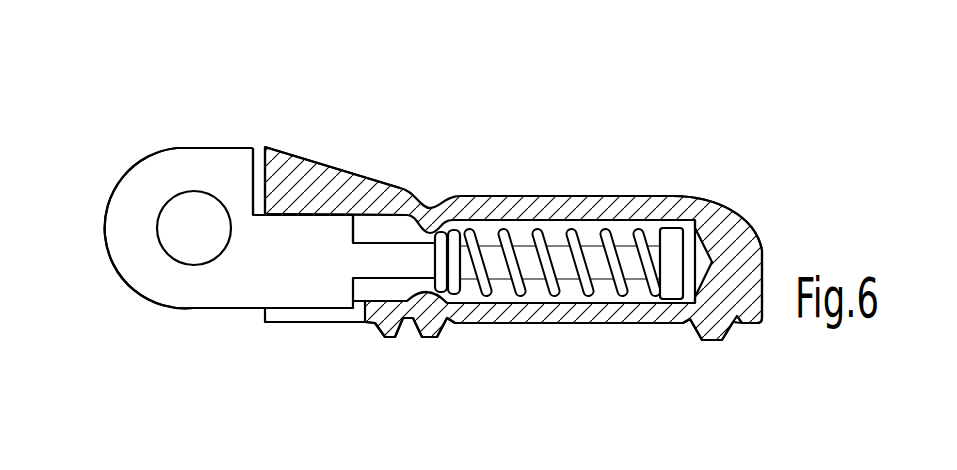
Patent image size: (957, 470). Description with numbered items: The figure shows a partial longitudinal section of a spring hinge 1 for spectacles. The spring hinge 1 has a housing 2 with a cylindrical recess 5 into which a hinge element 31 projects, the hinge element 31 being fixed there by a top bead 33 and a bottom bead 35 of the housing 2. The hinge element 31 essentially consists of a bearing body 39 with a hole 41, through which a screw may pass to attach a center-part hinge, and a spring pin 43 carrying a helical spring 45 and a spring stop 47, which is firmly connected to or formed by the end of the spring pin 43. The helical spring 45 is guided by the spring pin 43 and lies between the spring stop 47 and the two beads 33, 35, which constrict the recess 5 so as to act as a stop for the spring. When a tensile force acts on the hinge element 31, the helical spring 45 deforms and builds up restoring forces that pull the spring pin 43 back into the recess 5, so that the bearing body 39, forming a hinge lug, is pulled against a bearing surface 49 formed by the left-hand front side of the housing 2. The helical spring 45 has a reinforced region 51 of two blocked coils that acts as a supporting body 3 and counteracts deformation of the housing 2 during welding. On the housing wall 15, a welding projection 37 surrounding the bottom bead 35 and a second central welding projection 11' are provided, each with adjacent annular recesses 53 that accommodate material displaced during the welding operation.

The spring hinge 1 is at (558, 195).
The housing 2 is at (735, 245).
The supporting body 3 is at (474, 222).
The cylindrical recess 5 is at (395, 287).
The second central welding projection 11' is at (753, 386).
The housing wall 15 is at (603, 313).
The hinge element 31 is at (150, 298).
The top bead 33 is at (431, 240).
The bottom bead 35 is at (438, 295).
The welding projection 37 is at (392, 338).
The bearing body 39 is at (172, 172).
The hole 41 is at (198, 225).
The spring pin 43 is at (392, 255).
The helical spring 45 is at (593, 225).
The spring stop 47 is at (670, 250).
The bearing surface 49 is at (258, 168).
The reinforced region 51 is at (488, 296).
The annular recesses 53 is at (377, 323).